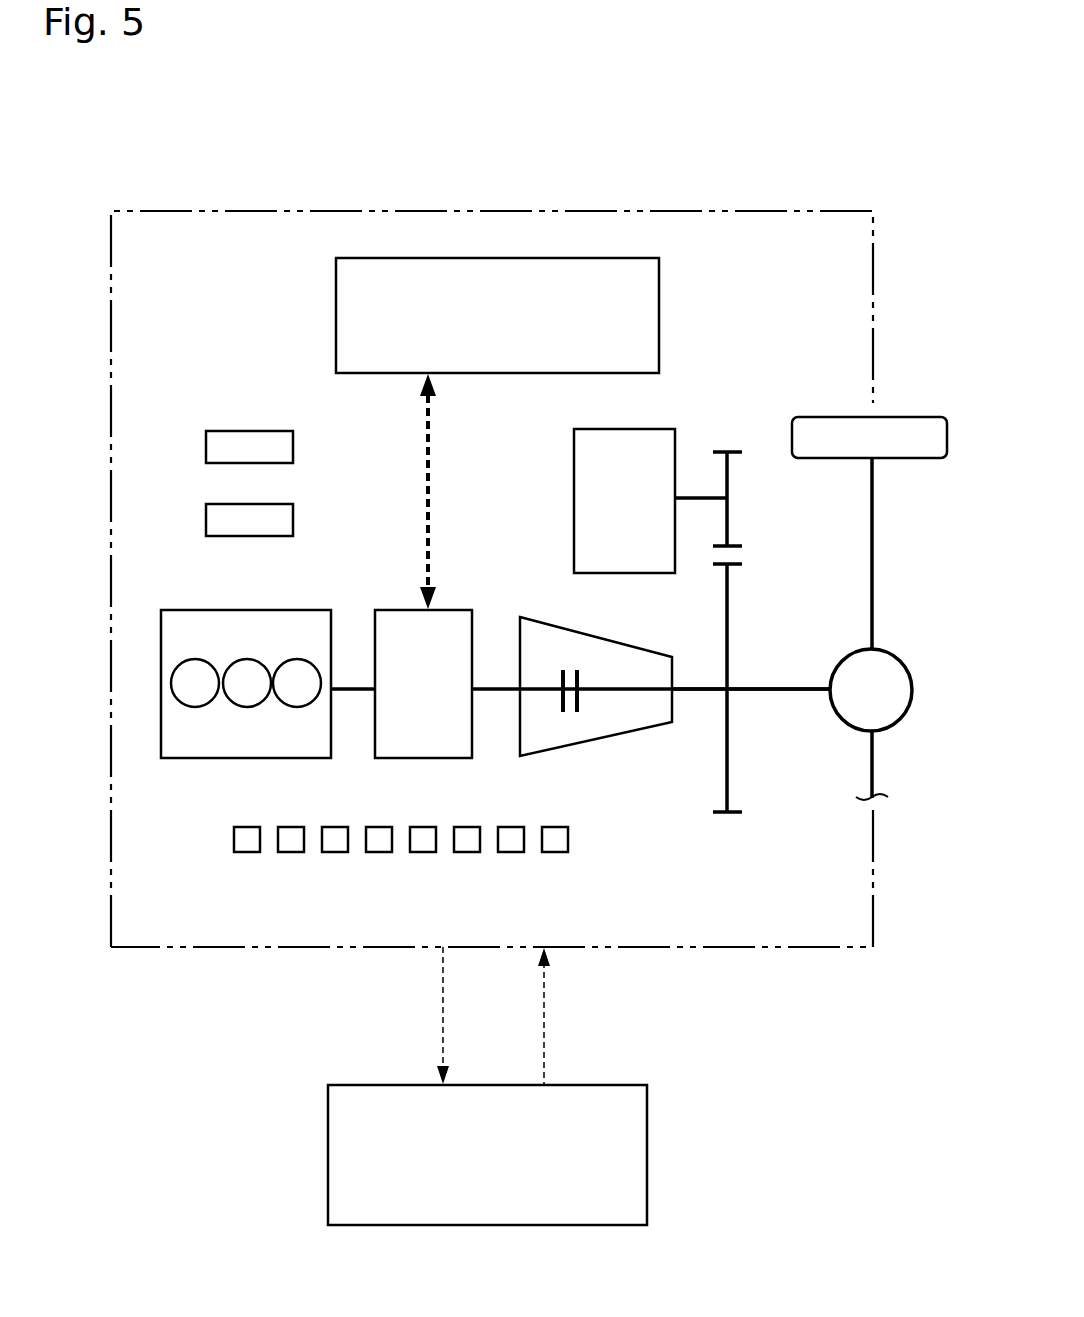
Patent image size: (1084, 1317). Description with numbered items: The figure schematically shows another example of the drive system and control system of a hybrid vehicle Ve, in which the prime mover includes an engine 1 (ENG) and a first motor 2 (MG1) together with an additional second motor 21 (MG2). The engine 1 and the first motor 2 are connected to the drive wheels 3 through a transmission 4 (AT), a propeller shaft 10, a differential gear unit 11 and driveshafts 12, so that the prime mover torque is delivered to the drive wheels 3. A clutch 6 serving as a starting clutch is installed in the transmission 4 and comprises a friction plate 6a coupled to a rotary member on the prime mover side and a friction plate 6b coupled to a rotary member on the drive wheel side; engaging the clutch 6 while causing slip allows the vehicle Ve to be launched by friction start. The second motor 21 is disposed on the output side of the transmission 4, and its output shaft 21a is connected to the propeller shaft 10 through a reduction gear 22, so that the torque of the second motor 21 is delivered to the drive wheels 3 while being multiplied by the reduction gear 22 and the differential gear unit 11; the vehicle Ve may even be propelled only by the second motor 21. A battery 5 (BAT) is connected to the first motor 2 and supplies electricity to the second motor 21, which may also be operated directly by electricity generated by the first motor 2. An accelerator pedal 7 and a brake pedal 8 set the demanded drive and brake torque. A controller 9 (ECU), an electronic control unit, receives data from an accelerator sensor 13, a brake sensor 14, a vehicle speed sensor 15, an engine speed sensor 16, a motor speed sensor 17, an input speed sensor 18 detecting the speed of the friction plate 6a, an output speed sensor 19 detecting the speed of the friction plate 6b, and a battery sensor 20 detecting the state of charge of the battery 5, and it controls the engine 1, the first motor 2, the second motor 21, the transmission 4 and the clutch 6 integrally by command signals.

The engine 1 is at (313, 610).
The first motor 2 is at (450, 610).
The drive wheels 3 is at (910, 416).
The transmission 4 is at (640, 650).
The battery 5 is at (660, 318).
The clutch 6 is at (583, 694).
The friction plate 6a is at (560, 712).
The friction plate 6b is at (585, 705).
The accelerator pedal 7 is at (293, 447).
The brake pedal 8 is at (293, 520).
The controller 9 is at (648, 1155).
The propeller shaft 10 is at (760, 695).
The differential gear unit 11 is at (913, 695).
The driveshafts 12 is at (874, 541).
The accelerator sensor 13 is at (247, 852).
The brake sensor 14 is at (291, 852).
The vehicle speed sensor 15 is at (335, 852).
The engine speed sensor 16 is at (379, 852).
The motor speed sensor 17 is at (423, 852).
The input speed sensor 18 is at (467, 852).
The output speed sensor 19 is at (511, 852).
The battery sensor 20 is at (555, 852).
The second motor 21 is at (573, 505).
The output shaft 21a is at (699, 498).
The reduction gear 22 is at (759, 547).
The vehicle Ve is at (808, 187).